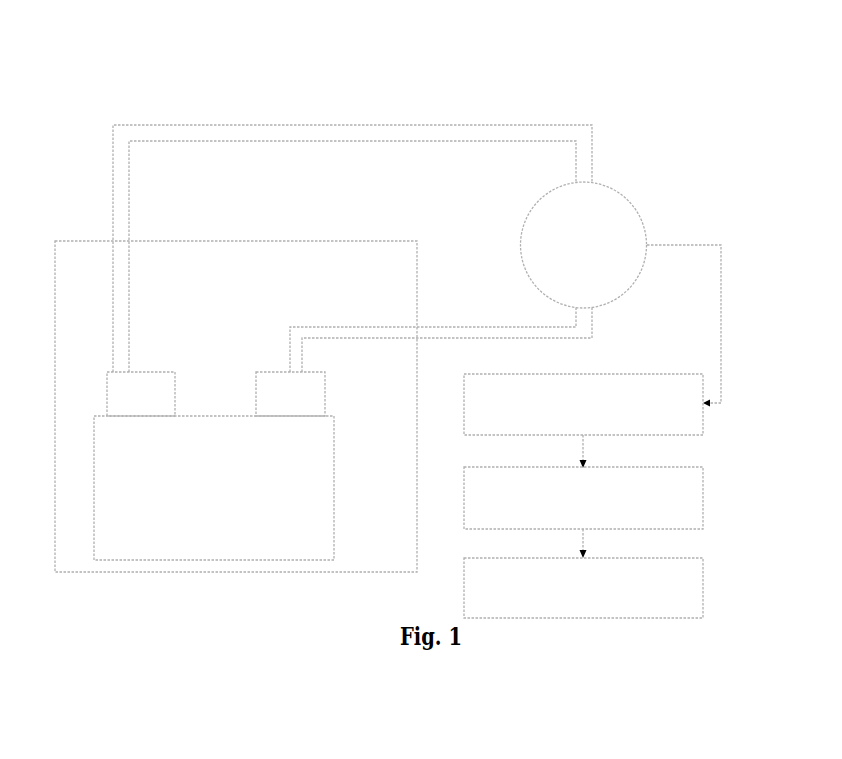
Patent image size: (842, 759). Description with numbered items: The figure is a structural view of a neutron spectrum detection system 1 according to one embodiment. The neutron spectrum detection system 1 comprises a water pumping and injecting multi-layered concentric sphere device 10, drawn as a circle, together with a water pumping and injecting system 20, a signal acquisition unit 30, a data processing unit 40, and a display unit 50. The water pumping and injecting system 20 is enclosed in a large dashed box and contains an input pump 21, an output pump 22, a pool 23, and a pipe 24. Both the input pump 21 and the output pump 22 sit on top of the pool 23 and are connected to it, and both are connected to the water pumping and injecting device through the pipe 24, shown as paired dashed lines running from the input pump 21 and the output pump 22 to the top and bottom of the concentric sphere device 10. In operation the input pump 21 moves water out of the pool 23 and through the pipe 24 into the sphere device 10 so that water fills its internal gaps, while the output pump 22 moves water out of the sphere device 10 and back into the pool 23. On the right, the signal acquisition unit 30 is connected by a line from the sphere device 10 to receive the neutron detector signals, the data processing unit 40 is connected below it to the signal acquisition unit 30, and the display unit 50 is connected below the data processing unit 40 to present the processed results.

The neutron spectrum detection system 1 is at (516, 67).
The water pumping and injecting multi-layered concentric sphere device 10 is at (643, 218).
The water pumping and injecting system 20 is at (235, 240).
The input pump 21 is at (155, 371).
The output pump 22 is at (325, 388).
The pool 23 is at (334, 459).
The pipe 24 is at (348, 326).
The signal acquisition unit 30 is at (642, 372).
The data processing unit 40 is at (680, 467).
The display unit 50 is at (677, 557).